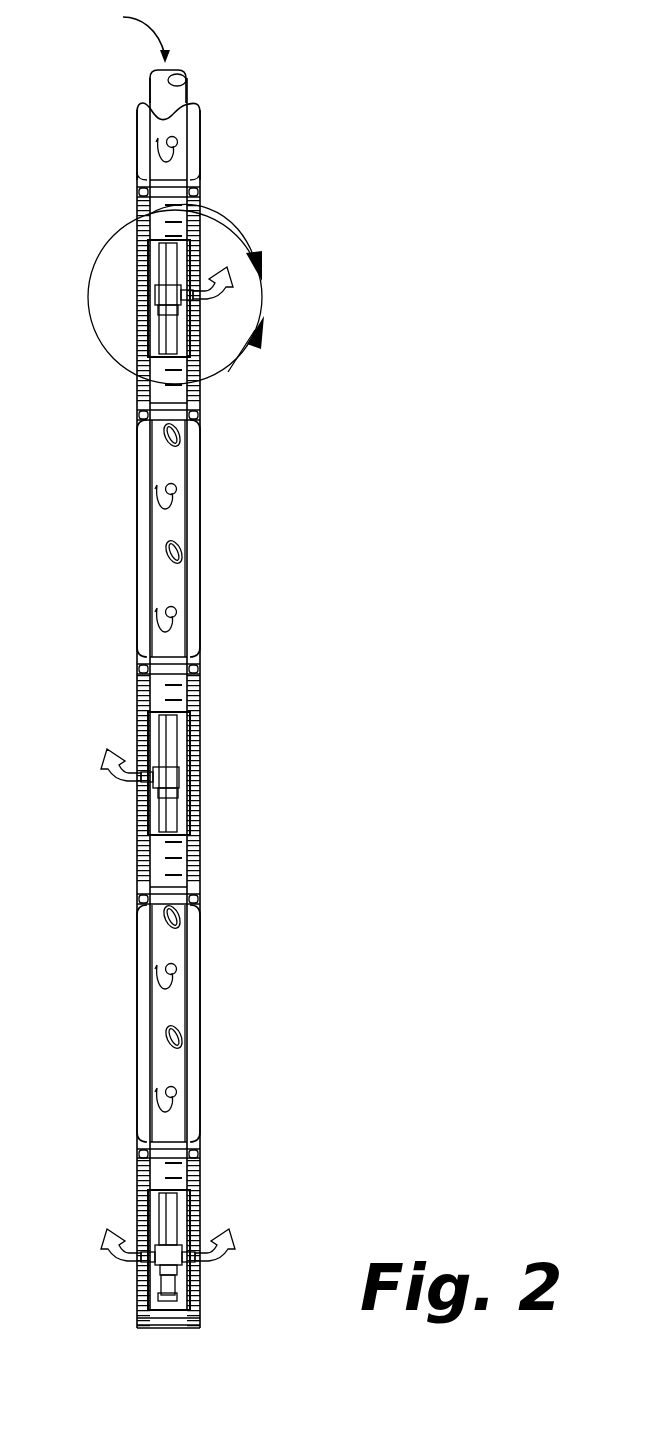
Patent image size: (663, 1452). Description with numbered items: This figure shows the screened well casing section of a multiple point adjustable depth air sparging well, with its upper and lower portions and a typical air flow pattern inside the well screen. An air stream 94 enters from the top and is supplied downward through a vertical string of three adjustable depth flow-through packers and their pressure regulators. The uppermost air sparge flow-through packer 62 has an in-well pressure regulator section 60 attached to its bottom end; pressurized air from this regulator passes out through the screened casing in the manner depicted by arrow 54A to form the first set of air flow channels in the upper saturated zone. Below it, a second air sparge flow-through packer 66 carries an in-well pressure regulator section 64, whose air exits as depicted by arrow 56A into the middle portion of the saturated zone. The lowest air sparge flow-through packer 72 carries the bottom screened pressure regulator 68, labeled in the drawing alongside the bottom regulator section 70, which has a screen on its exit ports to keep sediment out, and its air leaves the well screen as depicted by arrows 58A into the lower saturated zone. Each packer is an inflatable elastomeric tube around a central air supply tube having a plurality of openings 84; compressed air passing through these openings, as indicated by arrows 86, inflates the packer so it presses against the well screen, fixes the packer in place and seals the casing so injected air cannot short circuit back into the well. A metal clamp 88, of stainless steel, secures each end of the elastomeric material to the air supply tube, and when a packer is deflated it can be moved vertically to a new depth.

The air stream 94 is at (146, 22).
The air sparge flow-through packer 62 is at (200, 143).
The metal clamp 88 is at (200, 197).
The in-well pressure regulator section 60 is at (130, 293).
The arrow 54A is at (212, 297).
The air sparge flow-through packer 66 is at (200, 560).
The openings 84 is at (180, 553).
The arrows 86 is at (158, 497).
The in-well pressure regulator section 64 is at (131, 730).
The arrow 56A is at (122, 766).
The air sparge flow-through packer 72 is at (200, 1033).
The third tool section 70 is at (206, 1218).
The arrow 58A is at (125, 1250).
The screened pressure regulator 68 is at (184, 1270).